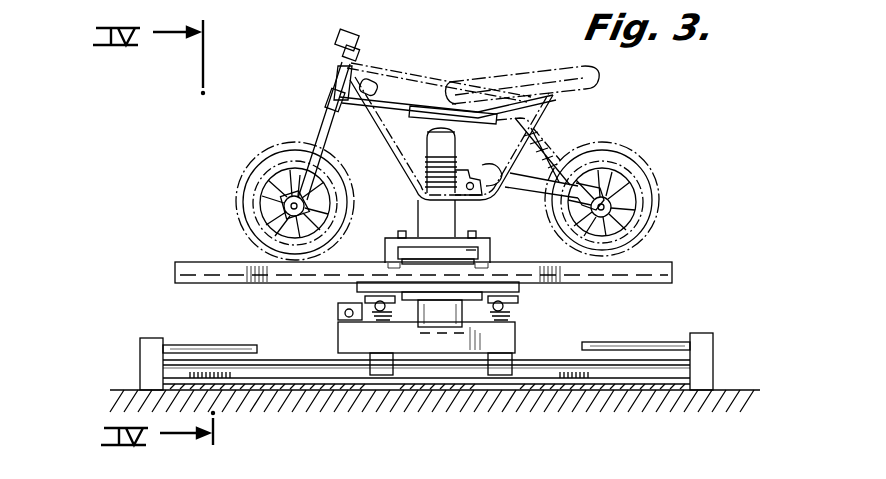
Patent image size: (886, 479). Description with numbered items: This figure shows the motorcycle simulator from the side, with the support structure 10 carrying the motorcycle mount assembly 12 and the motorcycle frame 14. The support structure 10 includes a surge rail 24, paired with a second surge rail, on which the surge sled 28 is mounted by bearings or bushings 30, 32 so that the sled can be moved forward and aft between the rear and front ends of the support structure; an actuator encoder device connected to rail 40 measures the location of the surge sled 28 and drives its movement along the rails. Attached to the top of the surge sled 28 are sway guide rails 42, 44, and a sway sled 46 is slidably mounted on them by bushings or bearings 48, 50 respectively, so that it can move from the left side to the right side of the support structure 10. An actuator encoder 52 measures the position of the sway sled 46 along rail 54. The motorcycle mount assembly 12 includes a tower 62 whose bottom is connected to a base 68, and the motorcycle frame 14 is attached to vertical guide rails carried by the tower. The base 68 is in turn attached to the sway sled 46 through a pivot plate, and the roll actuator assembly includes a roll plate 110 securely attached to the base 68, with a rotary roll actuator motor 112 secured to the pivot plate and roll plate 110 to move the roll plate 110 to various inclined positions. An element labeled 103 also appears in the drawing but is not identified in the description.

The support structure 10 is at (713, 378).
The motorcycle mount assembly 12 is at (366, 232).
The motorcycle frame 14 is at (479, 144).
The surge rail 24 is at (630, 363).
The surge sled 28 is at (437, 346).
The bearing or bushing 30 is at (380, 368).
The bearing or bushing 32 is at (500, 368).
The rail 40 is at (660, 342).
The sway guide rail 42 is at (520, 298).
The sway guide rail 44 is at (420, 326).
The sway sled 46 is at (345, 278).
The bushing or bearing 48 is at (508, 307).
The bushing or bearing 50 is at (355, 318).
The actuator encoder 52 is at (365, 301).
The rail 54 is at (338, 312).
The tower 62 is at (445, 142).
The base 68 is at (400, 236).
The clamp pad 103 is at (520, 244).
The roll plate 110 is at (480, 240).
The roll actuator motor 112 is at (440, 250).